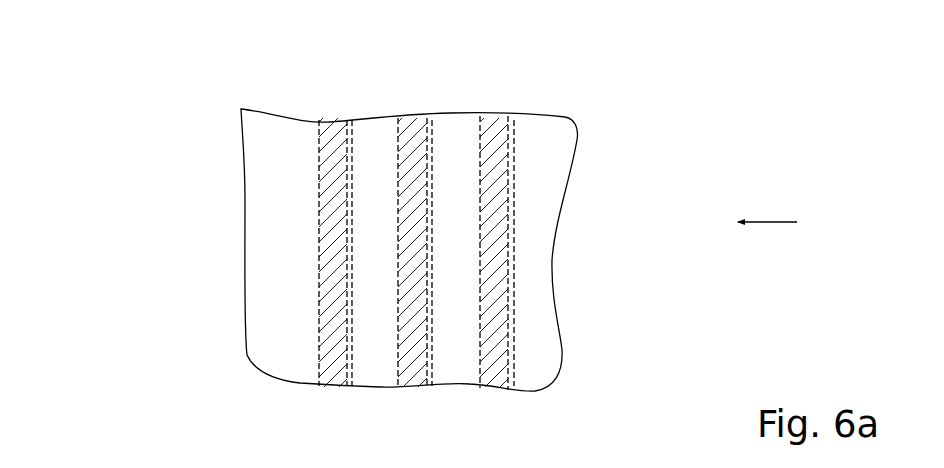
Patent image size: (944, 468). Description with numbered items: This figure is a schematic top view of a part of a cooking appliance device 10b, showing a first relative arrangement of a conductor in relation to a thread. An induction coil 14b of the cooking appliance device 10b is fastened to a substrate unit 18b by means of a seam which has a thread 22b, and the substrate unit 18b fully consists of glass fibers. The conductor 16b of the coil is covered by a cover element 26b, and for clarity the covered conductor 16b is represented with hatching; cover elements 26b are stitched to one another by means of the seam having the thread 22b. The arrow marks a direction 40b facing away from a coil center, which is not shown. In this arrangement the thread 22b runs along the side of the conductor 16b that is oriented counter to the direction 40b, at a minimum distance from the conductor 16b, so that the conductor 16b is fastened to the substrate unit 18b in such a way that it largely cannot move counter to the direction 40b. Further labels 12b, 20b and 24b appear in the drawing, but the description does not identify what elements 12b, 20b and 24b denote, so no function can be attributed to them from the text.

The cooking appliance device 10b is at (150, 93).
The substrate 12b is at (150, 142).
The induction coil 14b is at (455, 97).
The conductor 16b is at (325, 163).
The substrate unit 18b is at (245, 203).
The second region 20b is at (338, 395).
The thread 22b is at (353, 363).
The boundary layer 24b is at (353, 162).
The cover element 26b is at (245, 300).
The direction 40b is at (770, 222).